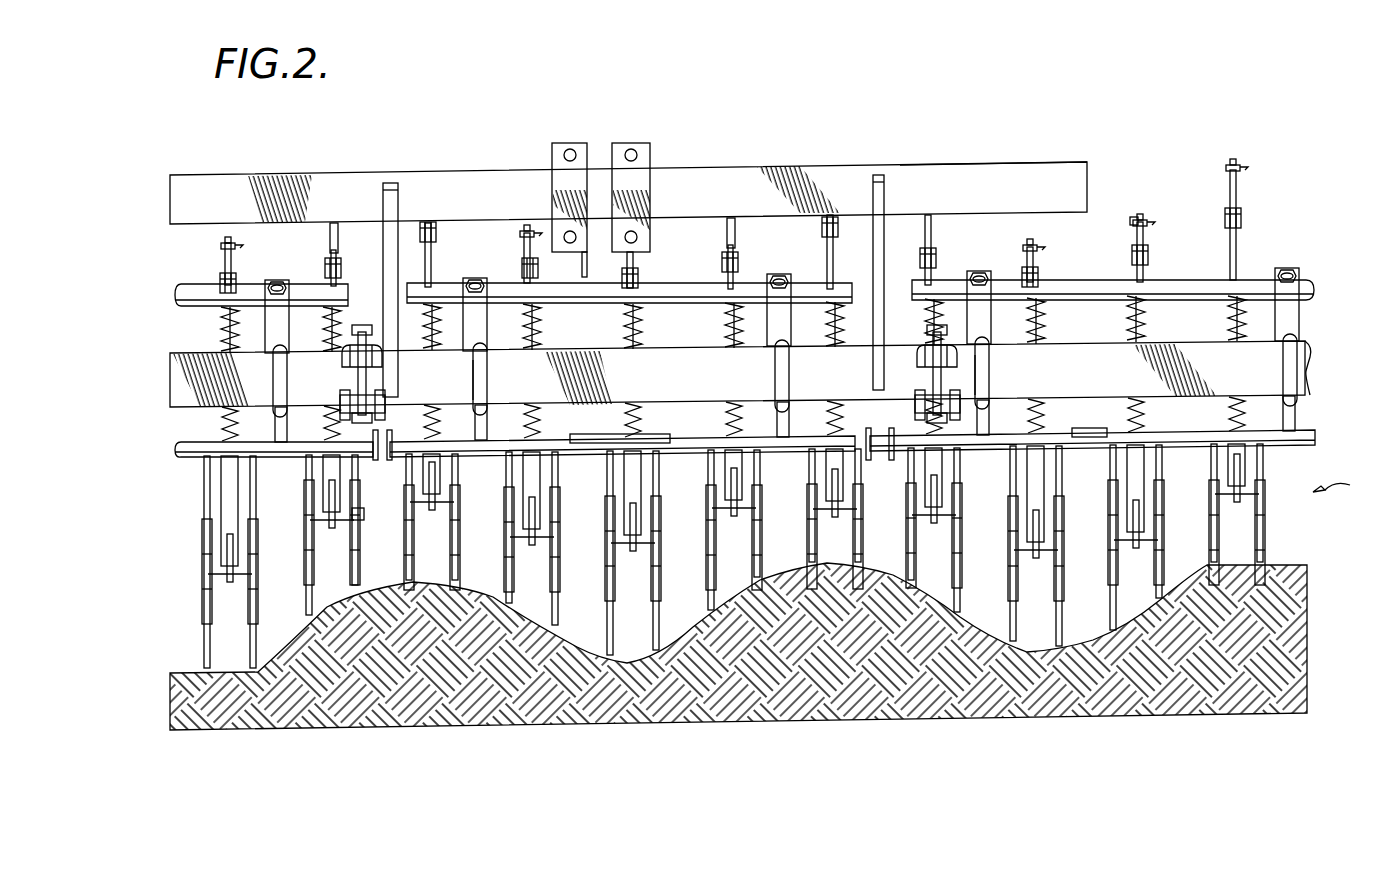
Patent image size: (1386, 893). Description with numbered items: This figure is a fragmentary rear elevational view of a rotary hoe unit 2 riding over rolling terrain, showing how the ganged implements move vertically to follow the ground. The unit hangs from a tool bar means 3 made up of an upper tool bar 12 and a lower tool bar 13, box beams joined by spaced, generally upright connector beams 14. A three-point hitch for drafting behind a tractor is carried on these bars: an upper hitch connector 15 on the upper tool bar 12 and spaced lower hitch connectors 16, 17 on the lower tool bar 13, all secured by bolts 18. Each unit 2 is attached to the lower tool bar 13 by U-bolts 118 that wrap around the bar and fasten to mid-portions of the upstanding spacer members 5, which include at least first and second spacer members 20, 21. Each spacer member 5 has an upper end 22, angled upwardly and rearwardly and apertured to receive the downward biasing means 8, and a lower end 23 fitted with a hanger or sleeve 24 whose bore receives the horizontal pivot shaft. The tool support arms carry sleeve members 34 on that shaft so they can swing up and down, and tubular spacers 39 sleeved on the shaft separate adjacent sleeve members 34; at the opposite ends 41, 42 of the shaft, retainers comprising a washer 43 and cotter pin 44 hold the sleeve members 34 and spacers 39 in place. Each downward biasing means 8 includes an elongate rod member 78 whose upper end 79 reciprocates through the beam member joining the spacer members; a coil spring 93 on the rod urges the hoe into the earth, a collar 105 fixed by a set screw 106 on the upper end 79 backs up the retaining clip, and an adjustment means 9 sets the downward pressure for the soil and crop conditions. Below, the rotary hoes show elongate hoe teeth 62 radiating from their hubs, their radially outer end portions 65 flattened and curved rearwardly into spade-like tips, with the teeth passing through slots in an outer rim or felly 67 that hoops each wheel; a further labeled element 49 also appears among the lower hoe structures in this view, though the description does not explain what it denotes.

The rotary hoe unit 2 is at (206, 274).
The tool bar means 3 is at (990, 163).
The spacer member 5 is at (290, 322).
The downward biasing means 8 is at (837, 264).
The adjustment means 9 is at (237, 278).
The upper tool bar 12 is at (470, 177).
The lower tool bar 13 is at (690, 358).
The connector beam 14 is at (389, 250).
The upper hitch connector 15 is at (637, 178).
The lower hitch connector 16 is at (345, 365).
The lower hitch connector 17 is at (935, 355).
The bolt 18 is at (636, 153).
The first spacer member 20 is at (270, 352).
The second spacer member 21 is at (1300, 315).
The upper end 22 is at (283, 282).
The lower end 23 is at (274, 405).
The hanger or sleeve 24 is at (286, 462).
The sleeve member 34 is at (200, 455).
The tubular spacer 39 is at (575, 437).
The end of pivot shaft 41 is at (376, 462).
The end of pivot shaft 42 is at (372, 460).
The washer 43 is at (356, 520).
The cotter pin 44 is at (865, 458).
The cross link 49 is at (234, 588).
The hoe tooth 62 is at (462, 552).
The radially outer end portion 65 is at (203, 482).
The outer rim or felly 67 is at (262, 545).
The rod member 78 is at (615, 320).
The upper end of rod member 79 is at (1134, 220).
The coil spring 93 is at (222, 330).
The collar 105 is at (522, 238).
The set screw 106 is at (532, 262).
The U-bolt 118 is at (473, 372).